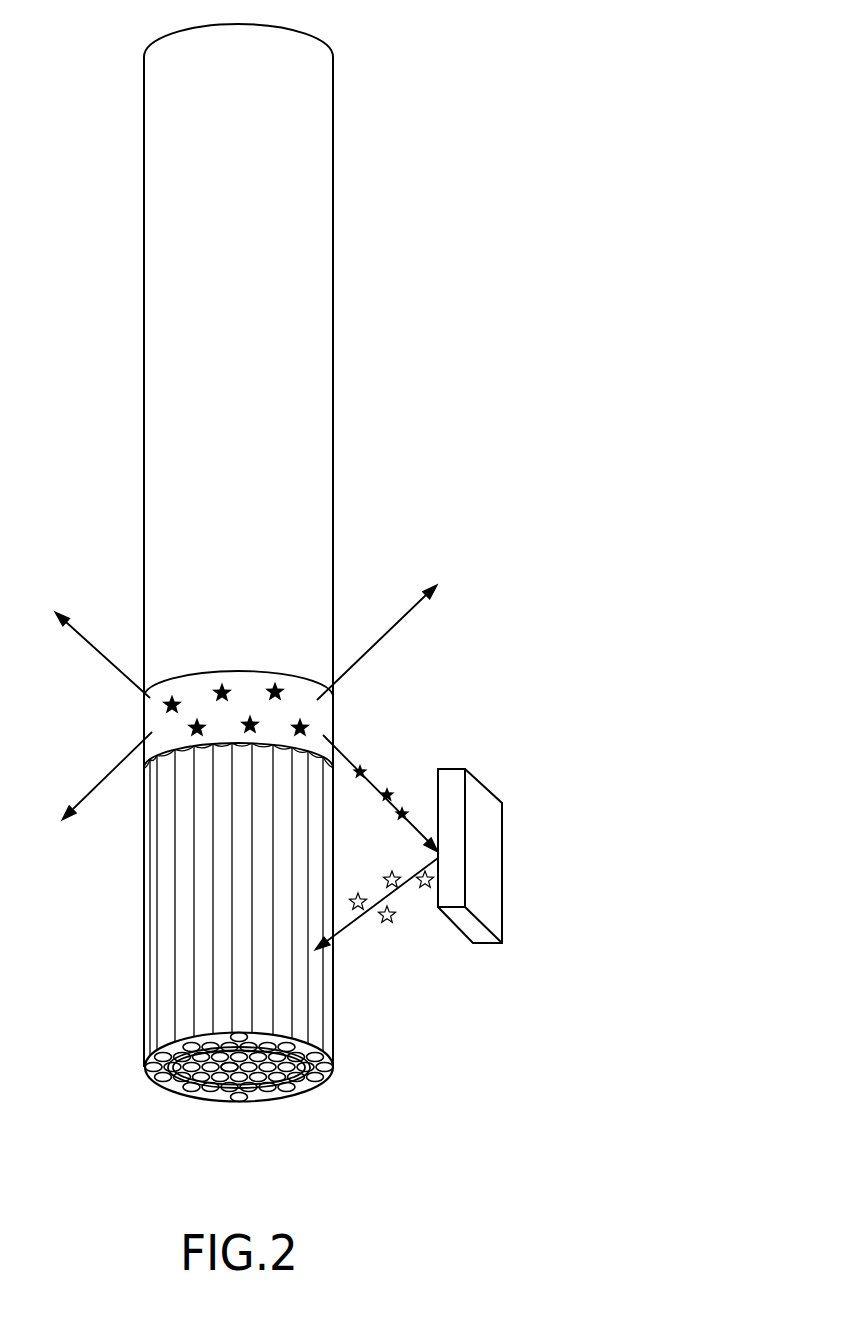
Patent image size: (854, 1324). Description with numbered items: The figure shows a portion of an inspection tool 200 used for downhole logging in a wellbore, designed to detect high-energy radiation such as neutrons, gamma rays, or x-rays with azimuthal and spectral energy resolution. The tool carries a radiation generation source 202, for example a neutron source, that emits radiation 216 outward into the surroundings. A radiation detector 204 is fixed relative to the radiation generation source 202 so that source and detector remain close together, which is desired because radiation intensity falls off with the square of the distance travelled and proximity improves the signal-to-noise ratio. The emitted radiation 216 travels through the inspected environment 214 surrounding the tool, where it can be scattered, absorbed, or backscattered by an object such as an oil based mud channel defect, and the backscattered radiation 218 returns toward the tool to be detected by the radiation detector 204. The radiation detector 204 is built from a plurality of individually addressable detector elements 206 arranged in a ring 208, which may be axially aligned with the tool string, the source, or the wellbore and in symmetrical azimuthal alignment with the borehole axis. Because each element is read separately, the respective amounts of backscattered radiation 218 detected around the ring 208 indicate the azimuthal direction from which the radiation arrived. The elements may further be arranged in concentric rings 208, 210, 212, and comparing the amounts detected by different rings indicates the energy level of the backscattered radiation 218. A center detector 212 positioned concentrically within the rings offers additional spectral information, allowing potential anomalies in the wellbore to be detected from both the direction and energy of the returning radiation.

The inspection tool 200 is at (425, 100).
The radiation generation source 202 is at (147, 720).
The radiation detector 204 is at (147, 920).
The individually addressable detector elements 206 is at (152, 1075).
The ring 208 is at (332, 1067).
The concentric ring 210 is at (283, 1075).
The center detector element 212 is at (225, 1073).
The inspected environment 214 is at (502, 803).
The emitted radiation 216 is at (383, 780).
The backscattered radiation 218 is at (388, 920).